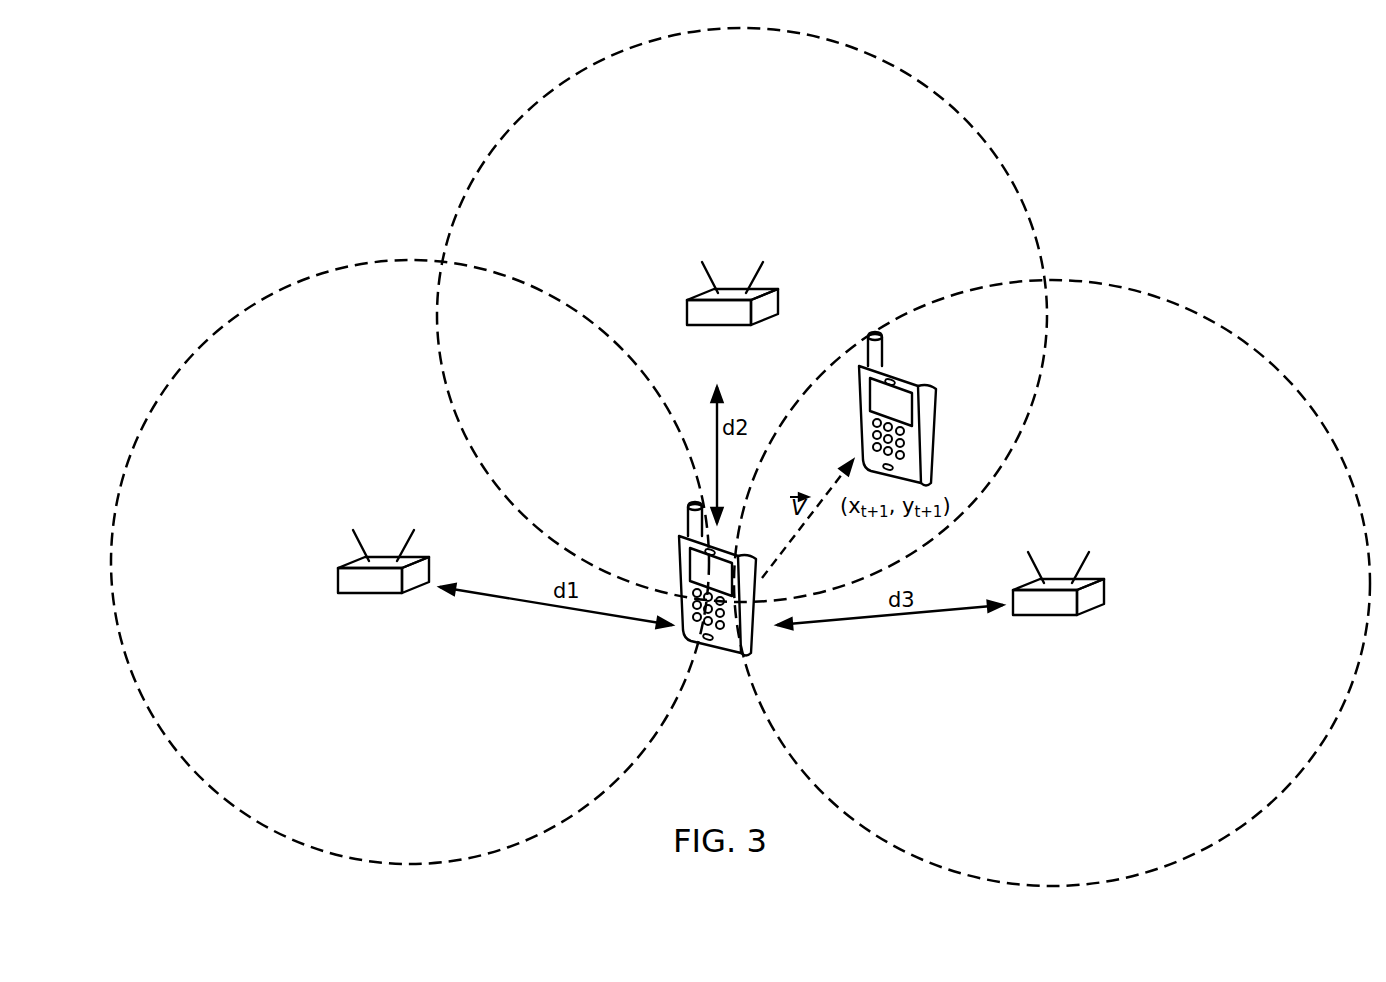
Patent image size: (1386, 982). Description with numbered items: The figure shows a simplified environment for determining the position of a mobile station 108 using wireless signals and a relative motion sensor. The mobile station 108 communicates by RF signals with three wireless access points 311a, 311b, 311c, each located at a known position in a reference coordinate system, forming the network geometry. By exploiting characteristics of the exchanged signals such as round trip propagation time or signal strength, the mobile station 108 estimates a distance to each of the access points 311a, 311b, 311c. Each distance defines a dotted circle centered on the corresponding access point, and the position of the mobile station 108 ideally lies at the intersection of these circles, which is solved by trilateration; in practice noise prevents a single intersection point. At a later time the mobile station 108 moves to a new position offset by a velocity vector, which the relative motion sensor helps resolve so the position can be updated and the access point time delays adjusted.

The wireless access point 311a is at (338, 569).
The wireless access point 311b is at (778, 289).
The wireless access point 311c is at (1104, 580).
The mobile station 108 is at (750, 645).